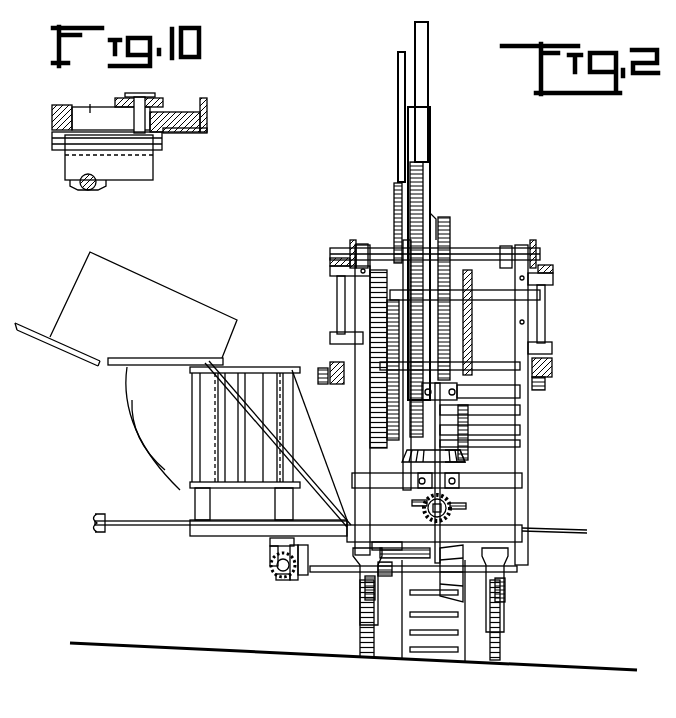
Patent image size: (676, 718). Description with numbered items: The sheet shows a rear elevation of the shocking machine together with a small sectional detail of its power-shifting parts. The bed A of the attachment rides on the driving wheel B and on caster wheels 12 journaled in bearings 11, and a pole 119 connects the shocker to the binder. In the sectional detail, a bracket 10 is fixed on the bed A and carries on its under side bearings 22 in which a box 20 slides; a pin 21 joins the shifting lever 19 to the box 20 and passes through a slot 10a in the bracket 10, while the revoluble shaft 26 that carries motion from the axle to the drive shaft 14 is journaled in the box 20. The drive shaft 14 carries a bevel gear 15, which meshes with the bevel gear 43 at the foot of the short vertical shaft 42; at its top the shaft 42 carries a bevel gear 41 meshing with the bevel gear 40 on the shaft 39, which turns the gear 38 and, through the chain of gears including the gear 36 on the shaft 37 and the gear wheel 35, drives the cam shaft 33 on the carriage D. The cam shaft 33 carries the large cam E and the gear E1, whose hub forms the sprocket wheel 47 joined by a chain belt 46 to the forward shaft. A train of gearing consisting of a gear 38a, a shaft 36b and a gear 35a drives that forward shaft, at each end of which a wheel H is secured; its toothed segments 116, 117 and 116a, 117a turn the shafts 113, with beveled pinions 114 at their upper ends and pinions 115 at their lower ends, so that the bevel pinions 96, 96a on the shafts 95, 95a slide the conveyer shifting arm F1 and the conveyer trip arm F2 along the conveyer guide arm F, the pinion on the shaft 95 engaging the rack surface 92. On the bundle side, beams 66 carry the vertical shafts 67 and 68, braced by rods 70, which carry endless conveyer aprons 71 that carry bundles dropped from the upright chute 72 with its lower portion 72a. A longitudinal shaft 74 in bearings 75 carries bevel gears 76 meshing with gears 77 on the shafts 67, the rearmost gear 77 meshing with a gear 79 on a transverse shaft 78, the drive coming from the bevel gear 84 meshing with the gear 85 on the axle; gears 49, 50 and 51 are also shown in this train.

In FIG. 10, the bracket 10 is at (52, 117).
In FIG. 10, the slot 10a is at (66, 96).
In FIG. 10, the shifting lever 19 is at (165, 100).
In FIG. 10, the box 20 is at (145, 177).
In FIG. 10, the pin 21 is at (150, 100).
In FIG. 10, the bearings 22 is at (162, 143).
In FIG. 10, the revoluble shaft 26 is at (78, 188).
In FIG. 10, the bed A is at (207, 103).
In FIG. 2, the driving wheel B is at (443, 640).
In FIG. 2, the carriage D is at (522, 440).
In FIG. 2, the large cam E is at (423, 177).
In FIG. 2, the gear E1 is at (443, 222).
In FIG. 2, the conveyer guide arm F is at (431, 142).
In FIG. 2, the conveyer shifting arm F1 is at (419, 85).
In FIG. 2, the conveyer trip arm F2 is at (398, 148).
In FIG. 2, the wheel H is at (336, 345).
In FIG. 2, the bearings 11 is at (360, 592).
In FIG. 2, the caster wheels 12 is at (366, 659).
In FIG. 2, the revoluble shaft 14 is at (505, 572).
In FIG. 2, the bevel gear 15 is at (480, 566).
In FIG. 2, the cam shaft 33 is at (500, 290).
In FIG. 2, the gear wheel 35 is at (370, 312).
In FIG. 2, the gear 35a is at (398, 370).
In FIG. 2, the gear 36 is at (372, 404).
In FIG. 2, the shaft 36b is at (495, 406).
In FIG. 2, the shaft 37 is at (496, 370).
In FIG. 2, the gear 38 is at (372, 430).
In FIG. 2, the gear 38a is at (387, 442).
In FIG. 2, the shaft 39 is at (522, 418).
In FIG. 2, the bevel gear 40 is at (466, 460).
In FIG. 2, the bevel gear 41 is at (407, 456).
In FIG. 2, the short vertical shaft 42 is at (522, 481).
In FIG. 2, the bevel gear 43 is at (460, 560).
In FIG. 2, the chain belt 46 is at (472, 331).
In FIG. 2, the sprocket wheel 47 is at (475, 254).
In FIG. 2, the gear 49 is at (468, 447).
In FIG. 2, the gear 50 is at (452, 508).
In FIG. 2, the shaft 51 is at (437, 524).
In FIG. 2, the beams 66 is at (232, 536).
In FIG. 2, the vertical shafts 67 is at (293, 503).
In FIG. 2, the vertical shafts 68 is at (195, 500).
In FIG. 2, the rods 70 is at (292, 458).
In FIG. 2, the endless conveyer aprons 71 is at (245, 427).
In FIG. 2, the upright chute 72 is at (180, 359).
In FIG. 2, the curved guide 72a is at (150, 438).
In FIG. 2, the longitudinal shaft 74 is at (284, 580).
In FIG. 2, the bearings 75 is at (278, 540).
In FIG. 2, the bevel gears 76 is at (271, 569).
In FIG. 2, the gears 77 is at (270, 555).
In FIG. 2, the transverse shaft 78 is at (310, 566).
In FIG. 2, the gear 79 is at (296, 582).
In FIG. 2, the bevel gear 84 is at (382, 526).
In FIG. 2, the gear 85 is at (378, 578).
In FIG. 2, the rack surface 92 is at (394, 200).
In FIG. 2, the shaft 95 is at (366, 246).
In FIG. 2, the shaft 95a is at (508, 248).
In FIG. 2, the bevel pinion 96 is at (350, 250).
In FIG. 2, the bevel pinion 96a is at (536, 250).
In FIG. 2, the shafts 113 is at (337, 298).
In FIG. 2, the beveled pinions 114 is at (330, 270).
In FIG. 2, the pinions 115 is at (548, 346).
In FIG. 2, the toothed segment 116 is at (332, 364).
In FIG. 2, the toothed segment 116a is at (552, 370).
In FIG. 2, the toothed segment 117 is at (320, 380).
In FIG. 2, the toothed segment 117a is at (545, 390).
In FIG. 2, the pole 119 is at (150, 526).